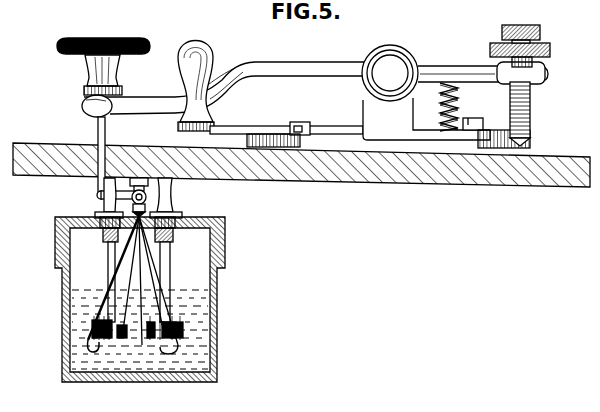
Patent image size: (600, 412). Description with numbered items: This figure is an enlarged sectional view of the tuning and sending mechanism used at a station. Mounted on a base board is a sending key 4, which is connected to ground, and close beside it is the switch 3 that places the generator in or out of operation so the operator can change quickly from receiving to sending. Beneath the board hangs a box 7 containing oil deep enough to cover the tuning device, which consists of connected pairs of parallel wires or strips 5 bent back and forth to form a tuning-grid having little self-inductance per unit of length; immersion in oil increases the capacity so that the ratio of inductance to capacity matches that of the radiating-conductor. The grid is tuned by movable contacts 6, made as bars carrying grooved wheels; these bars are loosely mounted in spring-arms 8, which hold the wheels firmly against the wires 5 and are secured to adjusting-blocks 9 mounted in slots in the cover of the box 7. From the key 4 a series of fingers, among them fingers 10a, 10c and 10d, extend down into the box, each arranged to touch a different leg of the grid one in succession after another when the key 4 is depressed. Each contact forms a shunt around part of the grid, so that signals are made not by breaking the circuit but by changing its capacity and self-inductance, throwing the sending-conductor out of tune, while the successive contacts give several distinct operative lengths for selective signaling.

The switch 3 is at (240, 126).
The key 4 is at (280, 66).
The parallel wires or strips 5 is at (156, 348).
The movable contacts 6 is at (185, 318).
The box 7 is at (212, 323).
The spring-arms 8 is at (108, 250).
The adjusting-blocks 9 is at (178, 218).
The finger 10a is at (163, 281).
The finger 10c is at (103, 345).
The finger 10d is at (109, 286).